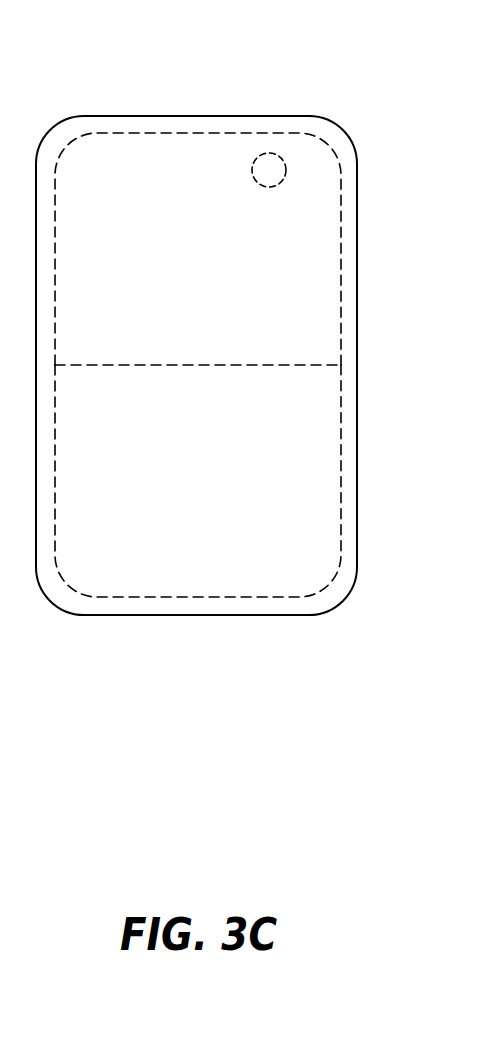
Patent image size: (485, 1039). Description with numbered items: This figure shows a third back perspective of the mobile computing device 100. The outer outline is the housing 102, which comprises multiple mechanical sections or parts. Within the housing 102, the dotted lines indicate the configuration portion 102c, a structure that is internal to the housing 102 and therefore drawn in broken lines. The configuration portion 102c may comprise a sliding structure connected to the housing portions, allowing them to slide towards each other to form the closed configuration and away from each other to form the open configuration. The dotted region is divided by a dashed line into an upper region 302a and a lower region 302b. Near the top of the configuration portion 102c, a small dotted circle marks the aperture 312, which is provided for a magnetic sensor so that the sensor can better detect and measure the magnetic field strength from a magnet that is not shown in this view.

The mobile computing device 100 is at (232, 63).
The housing 102 is at (357, 258).
The configuration portion 102c is at (309, 314).
The first region of back surface 302a is at (341, 205).
The second region of back surface 302b is at (341, 403).
The aperture 312 is at (252, 166).